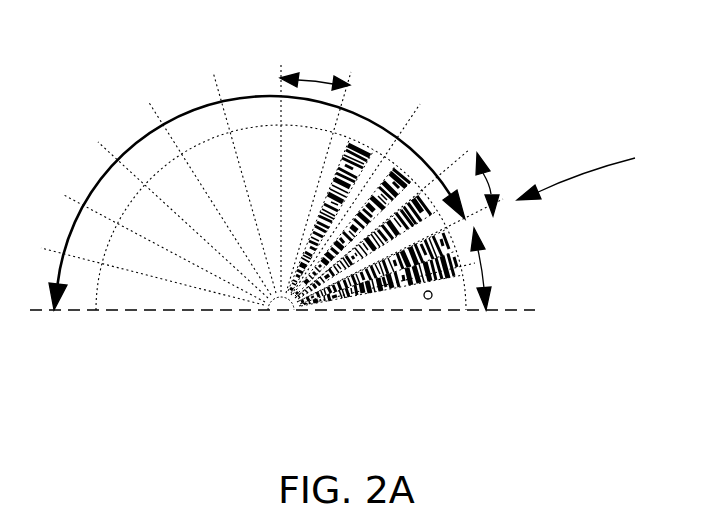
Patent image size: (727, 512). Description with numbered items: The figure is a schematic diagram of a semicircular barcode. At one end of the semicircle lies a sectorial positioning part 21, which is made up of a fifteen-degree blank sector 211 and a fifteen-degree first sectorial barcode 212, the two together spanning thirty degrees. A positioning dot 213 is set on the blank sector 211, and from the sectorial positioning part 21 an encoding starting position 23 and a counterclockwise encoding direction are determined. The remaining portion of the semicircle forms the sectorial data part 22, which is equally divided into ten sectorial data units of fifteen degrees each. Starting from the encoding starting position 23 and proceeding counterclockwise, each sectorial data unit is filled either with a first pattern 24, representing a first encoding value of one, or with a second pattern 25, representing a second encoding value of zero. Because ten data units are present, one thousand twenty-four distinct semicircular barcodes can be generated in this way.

The sectorial positioning part 21 is at (486, 268).
The sectorial data part 22 is at (180, 116).
The encoding starting position 23 is at (597, 168).
The first pattern 24 is at (488, 185).
The second pattern 25 is at (312, 78).
The blank sector 211 is at (387, 295).
The first sectorial barcode 212 is at (338, 298).
The positioning dot 213 is at (424, 297).